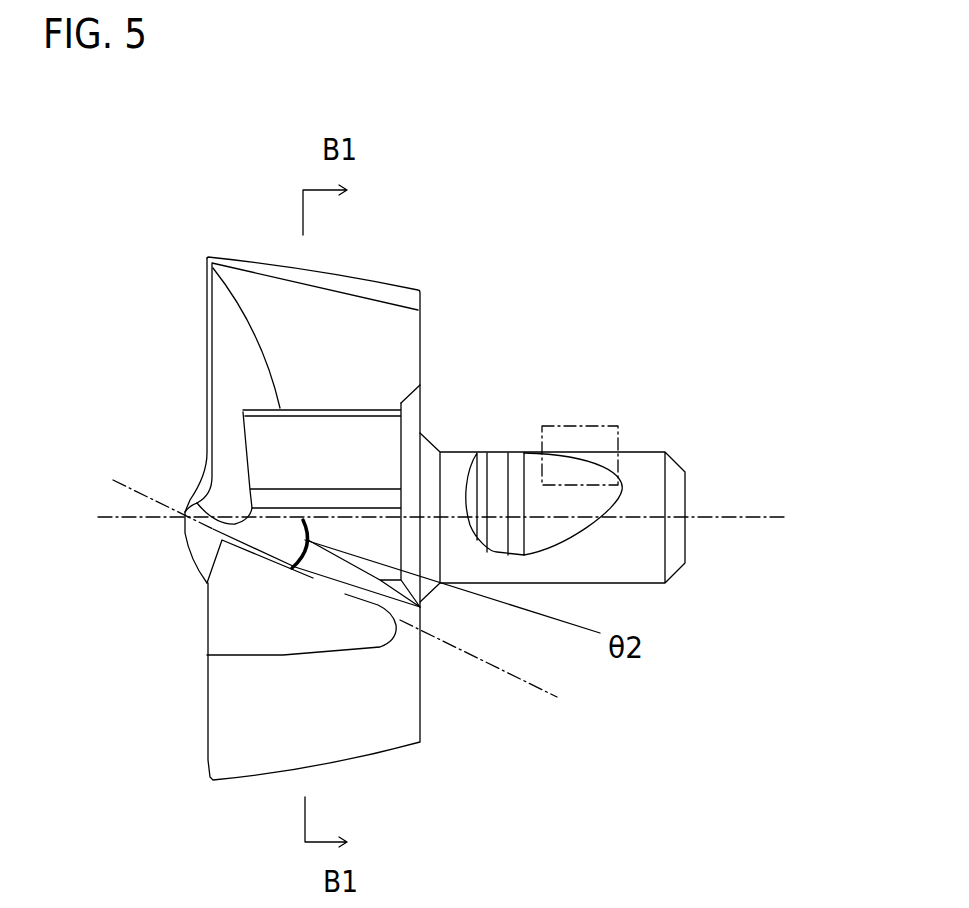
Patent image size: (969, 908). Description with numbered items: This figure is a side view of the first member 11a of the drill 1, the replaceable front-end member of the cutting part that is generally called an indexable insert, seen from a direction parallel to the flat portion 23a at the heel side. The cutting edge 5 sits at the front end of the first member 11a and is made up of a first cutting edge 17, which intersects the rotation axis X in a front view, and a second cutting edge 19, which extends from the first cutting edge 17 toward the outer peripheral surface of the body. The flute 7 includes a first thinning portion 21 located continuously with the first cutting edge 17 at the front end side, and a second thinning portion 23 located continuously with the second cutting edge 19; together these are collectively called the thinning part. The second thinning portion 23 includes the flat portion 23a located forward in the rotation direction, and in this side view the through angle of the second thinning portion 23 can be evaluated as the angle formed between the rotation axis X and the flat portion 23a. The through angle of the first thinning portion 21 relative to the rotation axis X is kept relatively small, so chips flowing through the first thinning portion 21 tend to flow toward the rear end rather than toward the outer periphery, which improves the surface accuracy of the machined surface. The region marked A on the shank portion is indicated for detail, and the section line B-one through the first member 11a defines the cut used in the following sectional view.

The drill 1 is at (272, 481).
The first member 11a is at (302, 518).
The cutting edge 5 is at (132, 507).
The second cutting edge 19 is at (205, 400).
The first cutting edge 17 is at (188, 549).
The flute 7 is at (298, 568).
The first thinning portion 21 is at (260, 543).
The second thinning portion 23 is at (242, 694).
The flat portion 23a is at (313, 578).
The detail region A is at (618, 426).
The rotation axis X is at (465, 519).